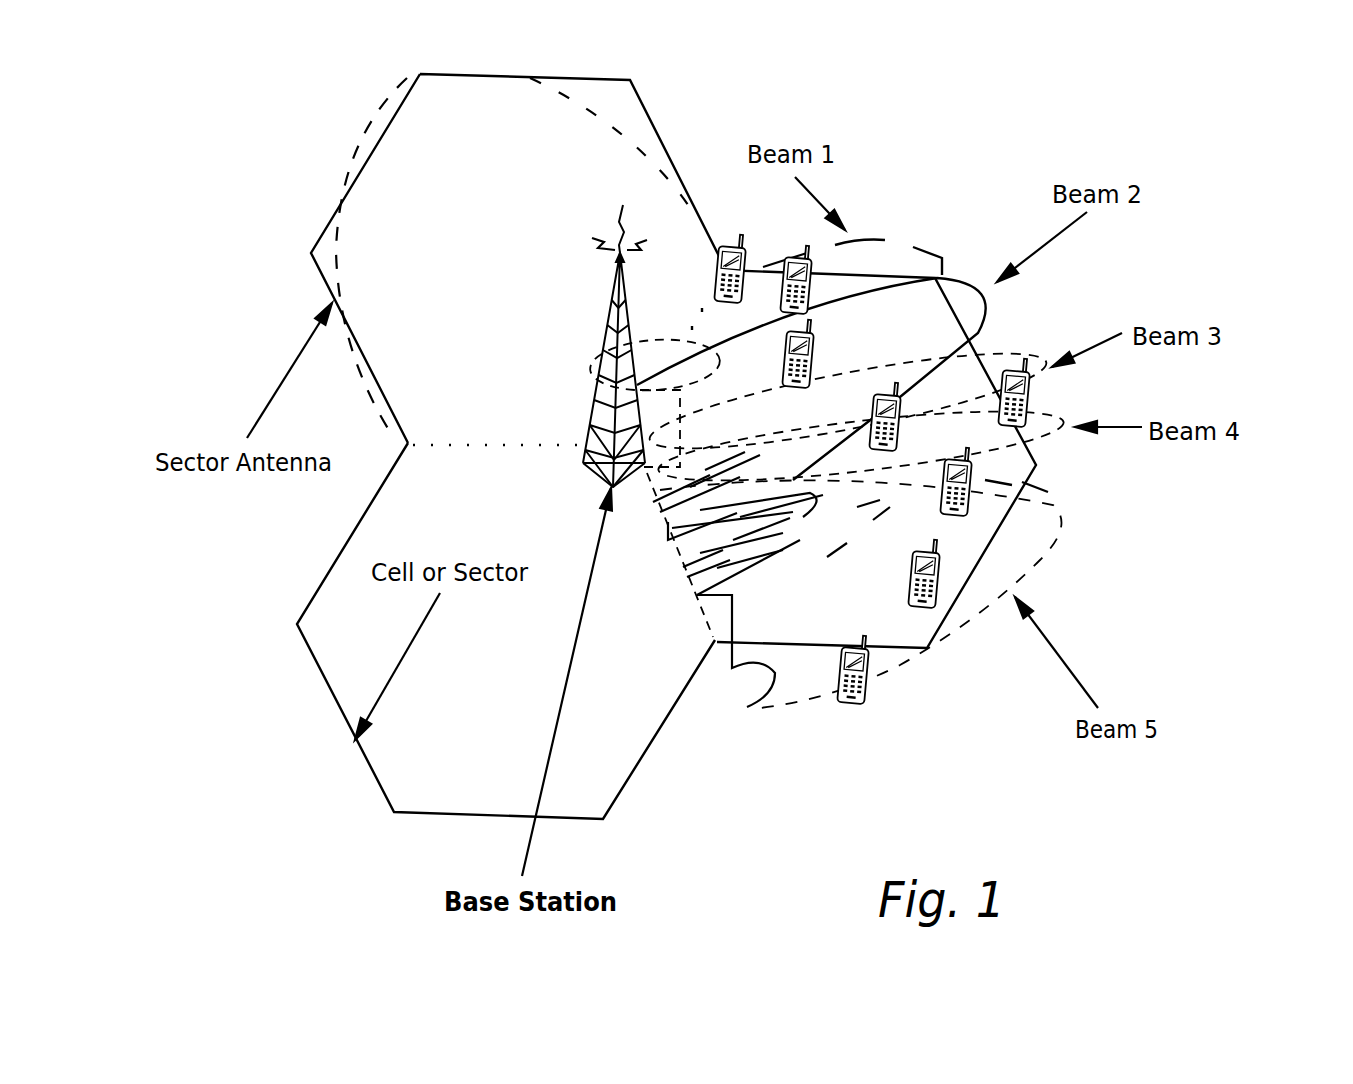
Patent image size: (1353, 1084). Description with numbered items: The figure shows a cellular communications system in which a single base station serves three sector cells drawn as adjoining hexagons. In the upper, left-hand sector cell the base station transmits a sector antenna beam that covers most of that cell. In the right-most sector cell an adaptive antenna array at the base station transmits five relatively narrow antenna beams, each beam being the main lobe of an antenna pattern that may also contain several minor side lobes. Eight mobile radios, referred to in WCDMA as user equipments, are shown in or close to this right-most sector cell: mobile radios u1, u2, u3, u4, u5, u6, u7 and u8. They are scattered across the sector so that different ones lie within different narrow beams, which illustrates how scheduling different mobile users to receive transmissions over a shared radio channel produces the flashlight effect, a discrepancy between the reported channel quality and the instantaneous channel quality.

The mobile radio u1 is at (714, 268).
The mobile radio u2 is at (790, 268).
The mobile radio u3 is at (780, 353).
The mobile radio u4 is at (867, 416).
The mobile radio u5 is at (996, 392).
The mobile radio u6 is at (937, 481).
The mobile radio u7 is at (921, 562).
The mobile radio u8 is at (846, 658).